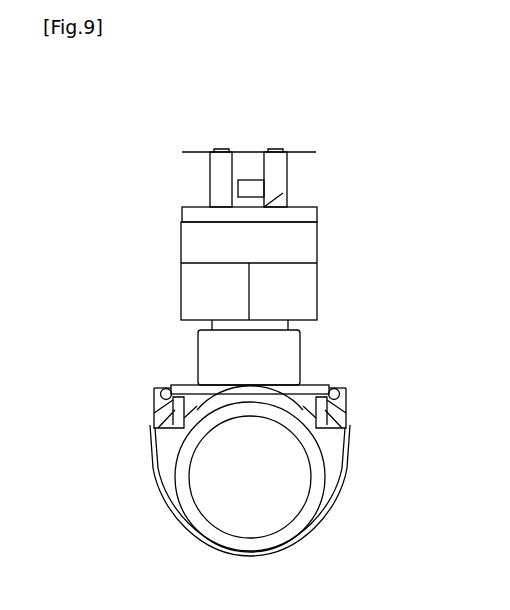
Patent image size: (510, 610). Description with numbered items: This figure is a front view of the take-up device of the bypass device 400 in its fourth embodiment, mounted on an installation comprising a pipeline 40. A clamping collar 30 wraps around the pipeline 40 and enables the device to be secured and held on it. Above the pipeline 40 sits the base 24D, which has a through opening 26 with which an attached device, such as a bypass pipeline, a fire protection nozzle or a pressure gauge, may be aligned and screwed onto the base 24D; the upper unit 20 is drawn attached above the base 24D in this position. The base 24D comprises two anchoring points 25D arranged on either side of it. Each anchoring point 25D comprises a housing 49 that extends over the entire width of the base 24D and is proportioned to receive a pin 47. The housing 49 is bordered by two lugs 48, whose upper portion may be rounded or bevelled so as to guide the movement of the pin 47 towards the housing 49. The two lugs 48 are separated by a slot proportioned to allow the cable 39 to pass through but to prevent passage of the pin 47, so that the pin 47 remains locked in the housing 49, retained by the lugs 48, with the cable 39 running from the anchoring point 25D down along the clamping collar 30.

The bypass device 400 is at (273, 123).
The actuator 20 is at (303, 240).
The base 24D is at (200, 385).
The anchoring point 25D is at (156, 376).
The through opening 26 is at (283, 345).
The pin 47 is at (330, 390).
The lug 48 is at (348, 403).
The housing 49 is at (341, 390).
The cable 39 is at (167, 493).
The pipeline 40 is at (268, 494).
The clamping collar 30 is at (183, 533).